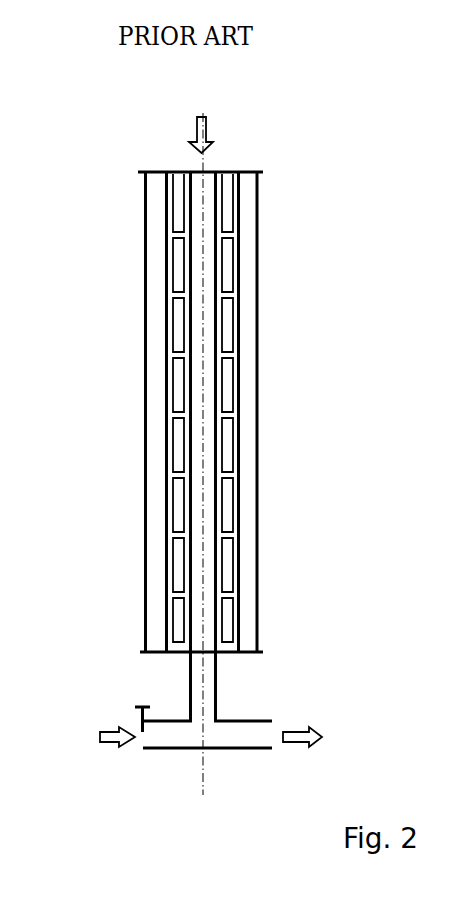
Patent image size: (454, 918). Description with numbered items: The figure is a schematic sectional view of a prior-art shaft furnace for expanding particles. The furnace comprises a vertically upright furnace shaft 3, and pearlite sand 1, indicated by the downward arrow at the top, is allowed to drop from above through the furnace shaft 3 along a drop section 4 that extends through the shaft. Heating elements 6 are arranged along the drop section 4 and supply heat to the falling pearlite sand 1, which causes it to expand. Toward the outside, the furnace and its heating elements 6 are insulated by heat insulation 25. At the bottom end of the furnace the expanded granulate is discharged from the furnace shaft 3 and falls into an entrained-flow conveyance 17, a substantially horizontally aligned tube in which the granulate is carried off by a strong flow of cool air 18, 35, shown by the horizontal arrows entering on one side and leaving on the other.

The pearlite sand 1 is at (207, 132).
The furnace shaft 3 is at (207, 505).
The drop section 4 is at (203, 560).
The heating elements 6 is at (228, 320).
The entrained-flow conveyance 17 is at (185, 735).
The flow of cool air 18 is at (112, 730).
The heat insulation 25 is at (248, 368).
The flow of cool air 35 is at (302, 728).